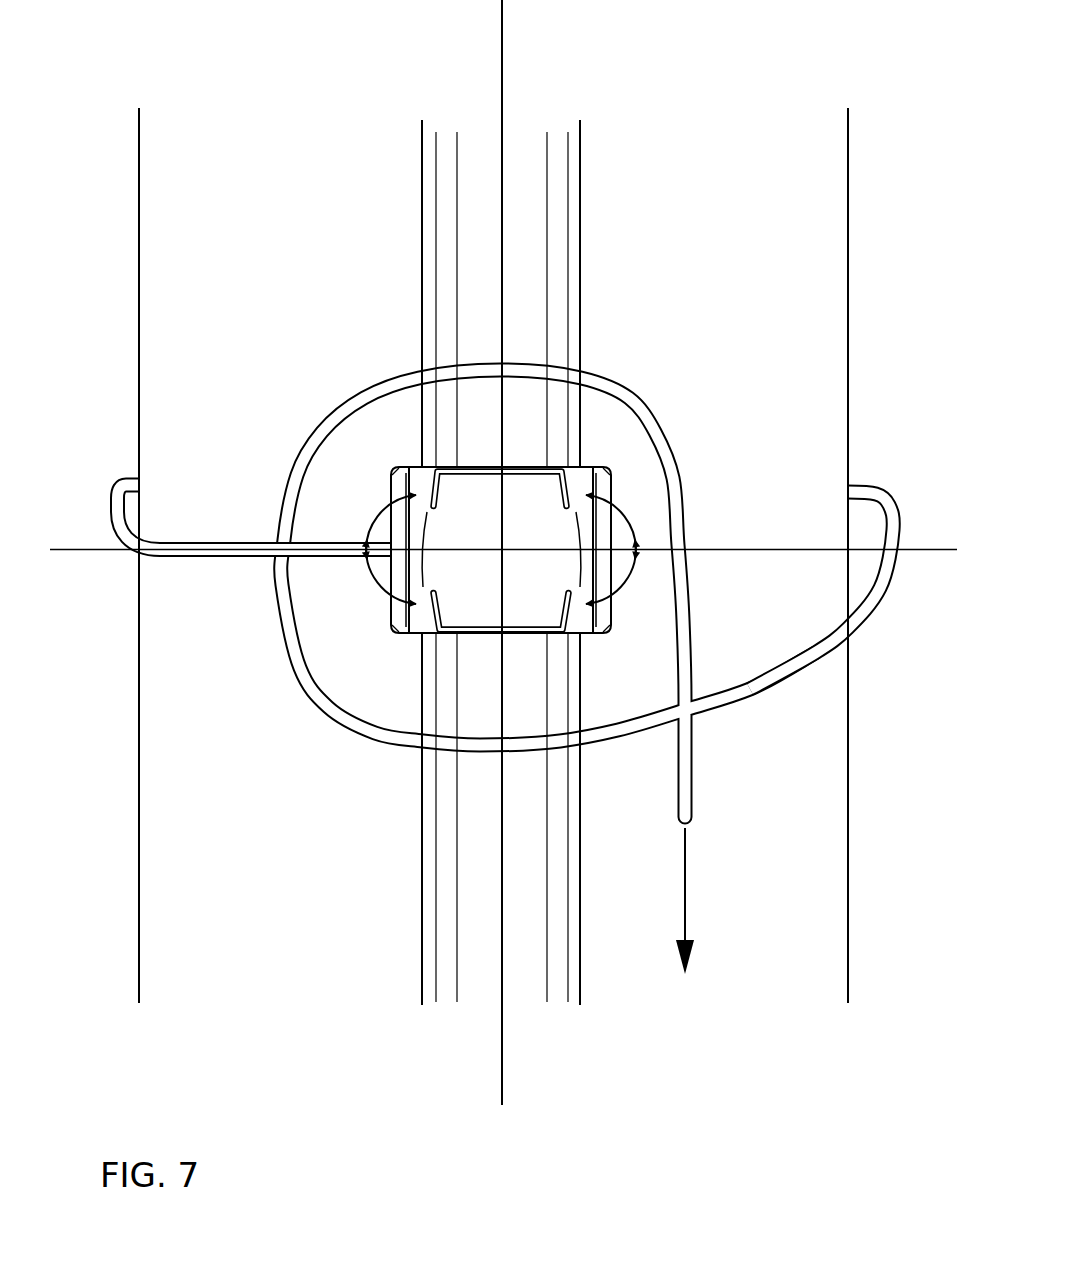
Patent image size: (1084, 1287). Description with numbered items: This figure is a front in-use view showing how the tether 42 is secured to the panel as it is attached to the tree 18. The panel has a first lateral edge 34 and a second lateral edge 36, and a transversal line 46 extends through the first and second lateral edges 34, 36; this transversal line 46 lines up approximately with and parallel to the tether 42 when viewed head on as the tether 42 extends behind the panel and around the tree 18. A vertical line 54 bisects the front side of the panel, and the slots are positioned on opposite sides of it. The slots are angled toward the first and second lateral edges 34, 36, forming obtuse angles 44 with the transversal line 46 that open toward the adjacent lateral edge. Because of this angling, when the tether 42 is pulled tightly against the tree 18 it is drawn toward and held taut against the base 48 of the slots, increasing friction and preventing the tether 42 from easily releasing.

The tree 18 is at (848, 167).
The first lateral edge 34 is at (393, 466).
The second lateral edge 36 is at (608, 466).
The tether 42 is at (901, 519).
The obtuse angle 44 is at (388, 500).
The transversal line 46 is at (765, 547).
The base of the slots 48 is at (566, 506).
The vertical line 54 is at (502, 1052).